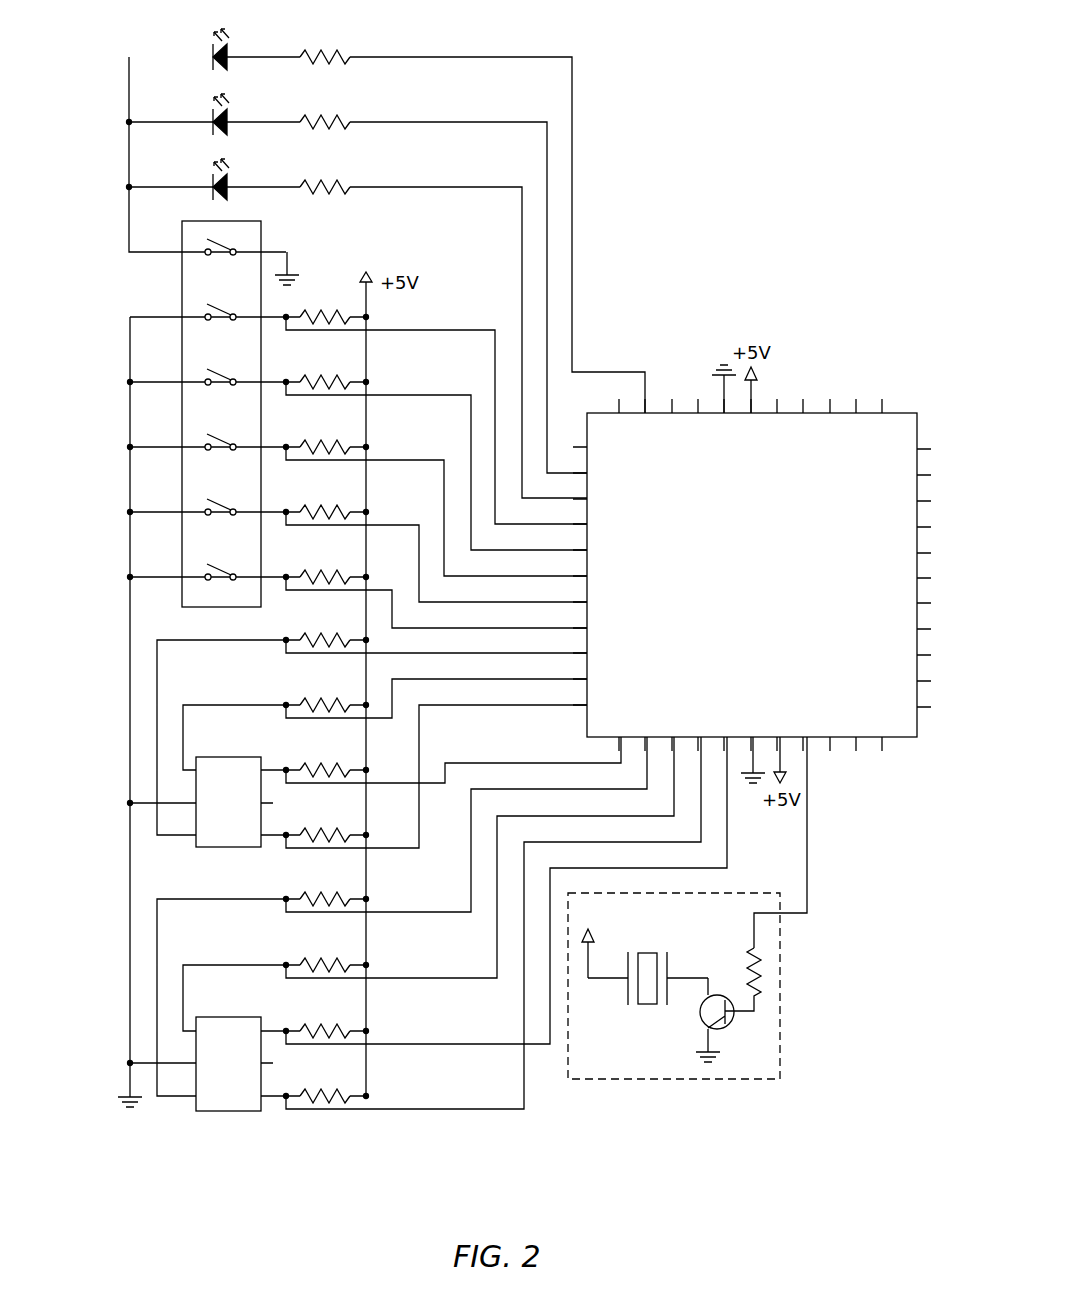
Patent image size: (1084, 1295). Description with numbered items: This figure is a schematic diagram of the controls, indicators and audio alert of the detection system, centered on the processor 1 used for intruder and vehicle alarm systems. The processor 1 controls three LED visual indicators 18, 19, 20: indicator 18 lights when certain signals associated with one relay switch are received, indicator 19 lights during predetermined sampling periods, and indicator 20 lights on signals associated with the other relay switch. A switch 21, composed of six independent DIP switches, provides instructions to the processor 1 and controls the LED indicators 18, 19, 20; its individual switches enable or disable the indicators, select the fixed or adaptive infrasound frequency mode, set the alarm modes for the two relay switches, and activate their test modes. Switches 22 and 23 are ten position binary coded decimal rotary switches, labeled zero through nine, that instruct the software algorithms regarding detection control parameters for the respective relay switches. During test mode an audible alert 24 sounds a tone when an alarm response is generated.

The processor 1 is at (818, 410).
The LED visual indicator 18 is at (209, 55).
The LED visual indicator 19 is at (209, 120).
The LED visual indicator 20 is at (209, 185).
The switch 21 is at (180, 291).
The rotary switch 22 is at (194, 783).
The rotary switch 23 is at (194, 1048).
The audible alert 24 is at (783, 987).